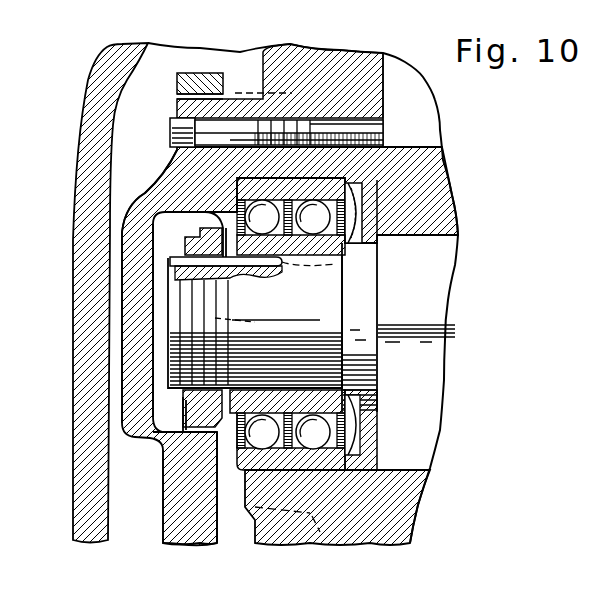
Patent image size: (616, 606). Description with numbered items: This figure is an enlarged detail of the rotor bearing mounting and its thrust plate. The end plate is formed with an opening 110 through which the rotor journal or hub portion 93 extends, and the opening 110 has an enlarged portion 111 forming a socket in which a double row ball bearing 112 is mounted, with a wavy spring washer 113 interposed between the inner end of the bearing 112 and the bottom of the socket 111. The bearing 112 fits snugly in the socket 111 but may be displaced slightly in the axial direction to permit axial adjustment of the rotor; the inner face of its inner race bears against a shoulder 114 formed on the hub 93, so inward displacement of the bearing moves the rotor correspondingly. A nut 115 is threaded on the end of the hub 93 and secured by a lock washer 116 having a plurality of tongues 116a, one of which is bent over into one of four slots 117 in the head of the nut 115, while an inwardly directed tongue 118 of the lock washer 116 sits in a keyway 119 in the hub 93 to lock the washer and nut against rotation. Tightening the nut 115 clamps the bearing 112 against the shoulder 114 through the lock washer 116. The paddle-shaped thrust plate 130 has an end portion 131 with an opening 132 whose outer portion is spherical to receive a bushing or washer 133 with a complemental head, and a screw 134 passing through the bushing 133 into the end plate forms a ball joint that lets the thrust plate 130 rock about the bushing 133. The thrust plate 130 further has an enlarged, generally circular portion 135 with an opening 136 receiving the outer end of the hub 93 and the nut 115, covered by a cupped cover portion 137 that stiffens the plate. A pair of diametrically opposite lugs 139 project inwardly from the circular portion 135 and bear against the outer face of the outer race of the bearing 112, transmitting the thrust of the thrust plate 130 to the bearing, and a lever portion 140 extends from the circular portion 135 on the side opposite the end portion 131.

The rotor journal or hub portion 93 is at (188, 316).
The opening 110 is at (370, 243).
The enlarged portion forming a socket 111 is at (335, 185).
The double row ball bearing 112 is at (347, 204).
The wavy spring washer 113 is at (354, 197).
The shoulder 114 is at (338, 299).
The nut 115 is at (187, 415).
The lock washer 116 is at (225, 440).
The tongues 116a is at (158, 214).
The slots 117 is at (150, 242).
The inwardly directed tongue 118 is at (250, 266).
The keyway 119 is at (290, 265).
The thrust plate 130 is at (170, 551).
The end portion 131 is at (193, 72).
The opening 132 is at (177, 97).
The bushing or washer 133 is at (180, 162).
The screw 134 is at (180, 128).
The enlarged, generally circular portion 135 is at (132, 294).
The opening 136 is at (200, 445).
The cupped cover portion 137 is at (130, 250).
The lugs 139 is at (254, 325).
The lever portion 140 is at (205, 545).